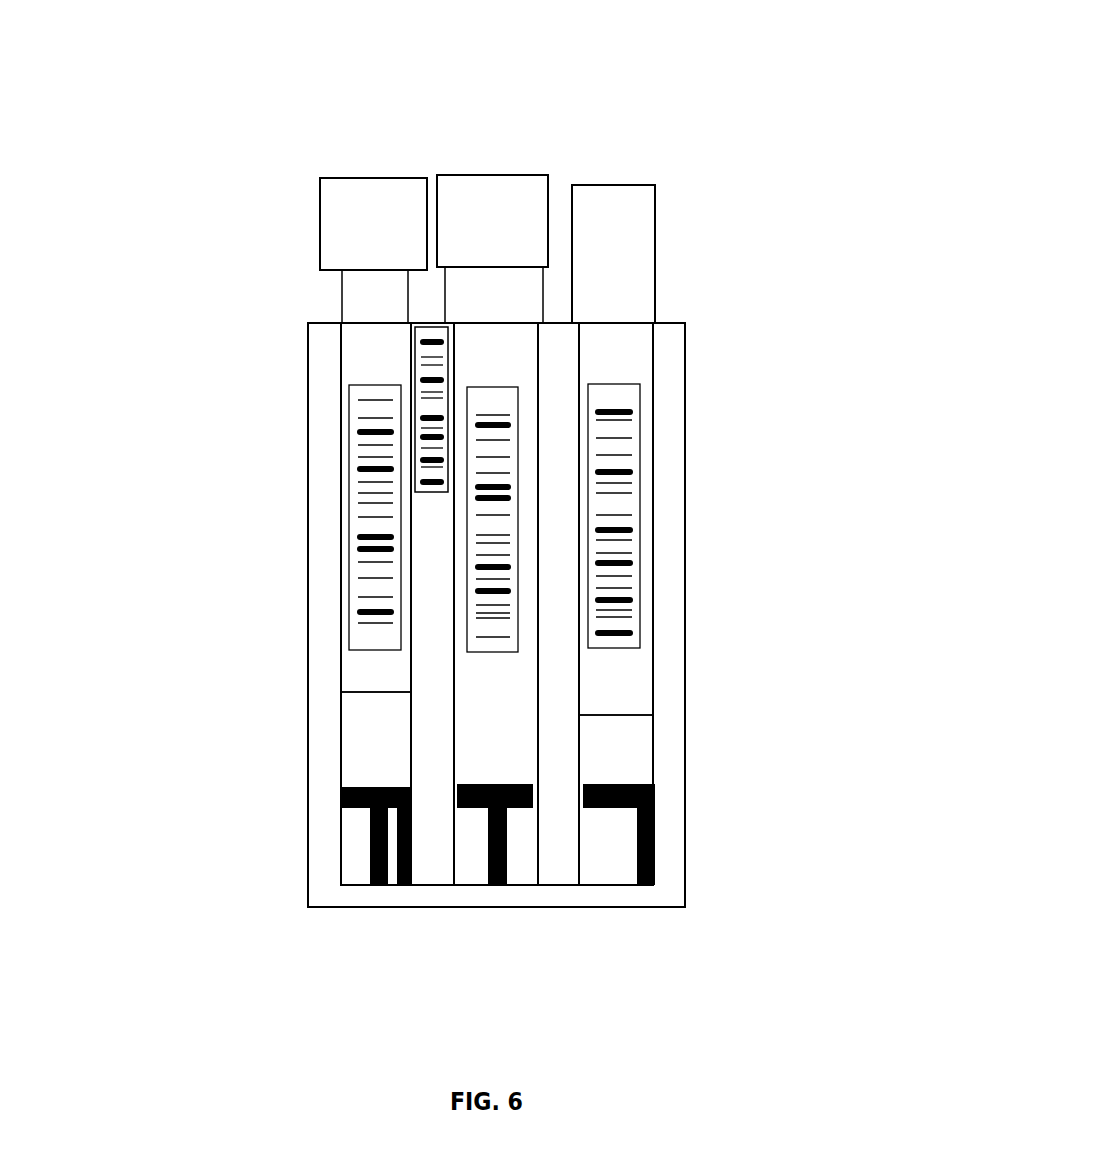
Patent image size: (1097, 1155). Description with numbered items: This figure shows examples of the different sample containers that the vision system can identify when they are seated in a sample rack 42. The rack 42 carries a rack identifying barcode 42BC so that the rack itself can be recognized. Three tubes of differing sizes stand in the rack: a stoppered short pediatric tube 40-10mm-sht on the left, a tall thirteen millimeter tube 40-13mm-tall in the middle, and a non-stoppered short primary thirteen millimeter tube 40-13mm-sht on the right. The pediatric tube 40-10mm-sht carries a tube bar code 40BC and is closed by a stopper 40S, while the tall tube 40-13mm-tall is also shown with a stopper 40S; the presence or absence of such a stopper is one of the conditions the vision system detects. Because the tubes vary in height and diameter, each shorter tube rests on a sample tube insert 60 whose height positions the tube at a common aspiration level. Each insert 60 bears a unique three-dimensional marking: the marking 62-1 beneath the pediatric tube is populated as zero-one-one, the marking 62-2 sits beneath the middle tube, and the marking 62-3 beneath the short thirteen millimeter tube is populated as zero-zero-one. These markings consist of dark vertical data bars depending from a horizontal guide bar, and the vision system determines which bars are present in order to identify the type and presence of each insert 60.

The stopper 40S is at (520, 175).
The short primary 13 mm tube 40-13mm-sht is at (655, 285).
The tall 13 mm tube 40-13mm-tall is at (520, 720).
The short pediatric tube 40-10mm-sht is at (347, 672).
The sample rack 42 is at (685, 697).
The rack identifying barcode 42BC is at (430, 322).
The tube bar code 40BC is at (378, 385).
The sample tube insert 60 is at (359, 732).
The 3-D marking 62-1 is at (348, 843).
The 3-D marking 62-2 is at (470, 880).
The 3-D marking 62-3 is at (656, 827).